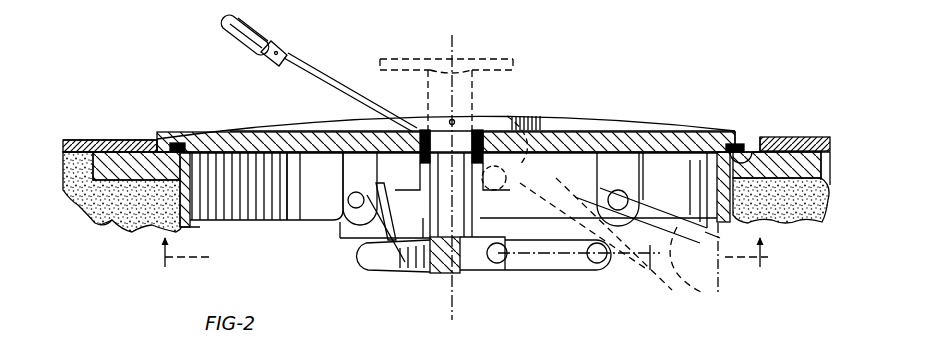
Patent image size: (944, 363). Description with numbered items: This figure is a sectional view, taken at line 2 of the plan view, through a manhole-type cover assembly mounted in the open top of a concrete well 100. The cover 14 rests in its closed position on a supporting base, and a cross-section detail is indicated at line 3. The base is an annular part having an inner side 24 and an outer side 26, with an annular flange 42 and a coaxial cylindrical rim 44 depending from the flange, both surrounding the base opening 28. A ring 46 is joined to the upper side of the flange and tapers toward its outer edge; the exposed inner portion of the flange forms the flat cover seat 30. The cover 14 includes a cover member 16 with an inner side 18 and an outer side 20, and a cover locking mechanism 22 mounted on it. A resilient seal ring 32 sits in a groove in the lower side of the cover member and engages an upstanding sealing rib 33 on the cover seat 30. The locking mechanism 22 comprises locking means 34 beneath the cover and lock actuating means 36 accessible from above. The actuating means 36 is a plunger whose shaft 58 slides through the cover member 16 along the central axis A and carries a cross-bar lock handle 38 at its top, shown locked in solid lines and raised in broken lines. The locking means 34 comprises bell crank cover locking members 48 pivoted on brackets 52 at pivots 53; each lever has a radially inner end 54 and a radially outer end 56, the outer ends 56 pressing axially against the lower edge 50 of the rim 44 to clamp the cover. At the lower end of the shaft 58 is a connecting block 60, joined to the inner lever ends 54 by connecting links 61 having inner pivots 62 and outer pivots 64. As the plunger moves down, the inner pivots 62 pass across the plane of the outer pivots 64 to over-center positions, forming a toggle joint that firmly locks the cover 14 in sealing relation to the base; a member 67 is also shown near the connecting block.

The section line 2— 2 is at (319, 66).
The section line 3— 3 is at (463, 263).
The cover 14 is at (540, 118).
The cover member 16 is at (605, 137).
The inner side of cover member 18 is at (296, 170).
The outer side of cover member 20 is at (272, 125).
The cover locking mechanism 22 is at (462, 278).
The inner side of base 24 is at (95, 190).
The outer side of base 26 is at (128, 139).
The base opening 28 is at (683, 263).
The cover seat 30 is at (167, 141).
The seal ring 32 is at (726, 143).
The sealing rib 33 is at (762, 140).
The locking means 34 is at (637, 264).
The lock actuating means 36 is at (507, 115).
The lock handle 38 is at (396, 115).
The annular flange 42 is at (810, 173).
The cylindrical rim 44 is at (181, 229).
The ring 46 is at (63, 143).
The cover locking members 48 is at (316, 240).
The lower edge of base rim 50 is at (258, 226).
The brackets 52 is at (355, 172).
The lever pivots 53 is at (347, 200).
The radially inner ends of levers 54 is at (593, 224).
The radially outer ends of levers 56 is at (645, 210).
The plunger shaft 58 is at (506, 188).
The connecting block 60 is at (452, 275).
The connecting links 61 is at (540, 272).
The inner link pivots 62 is at (503, 264).
The outer link pivots 64 is at (592, 265).
The rod 67 is at (393, 272).
The concrete well 100 is at (125, 229).
The central axis A is at (452, 52).